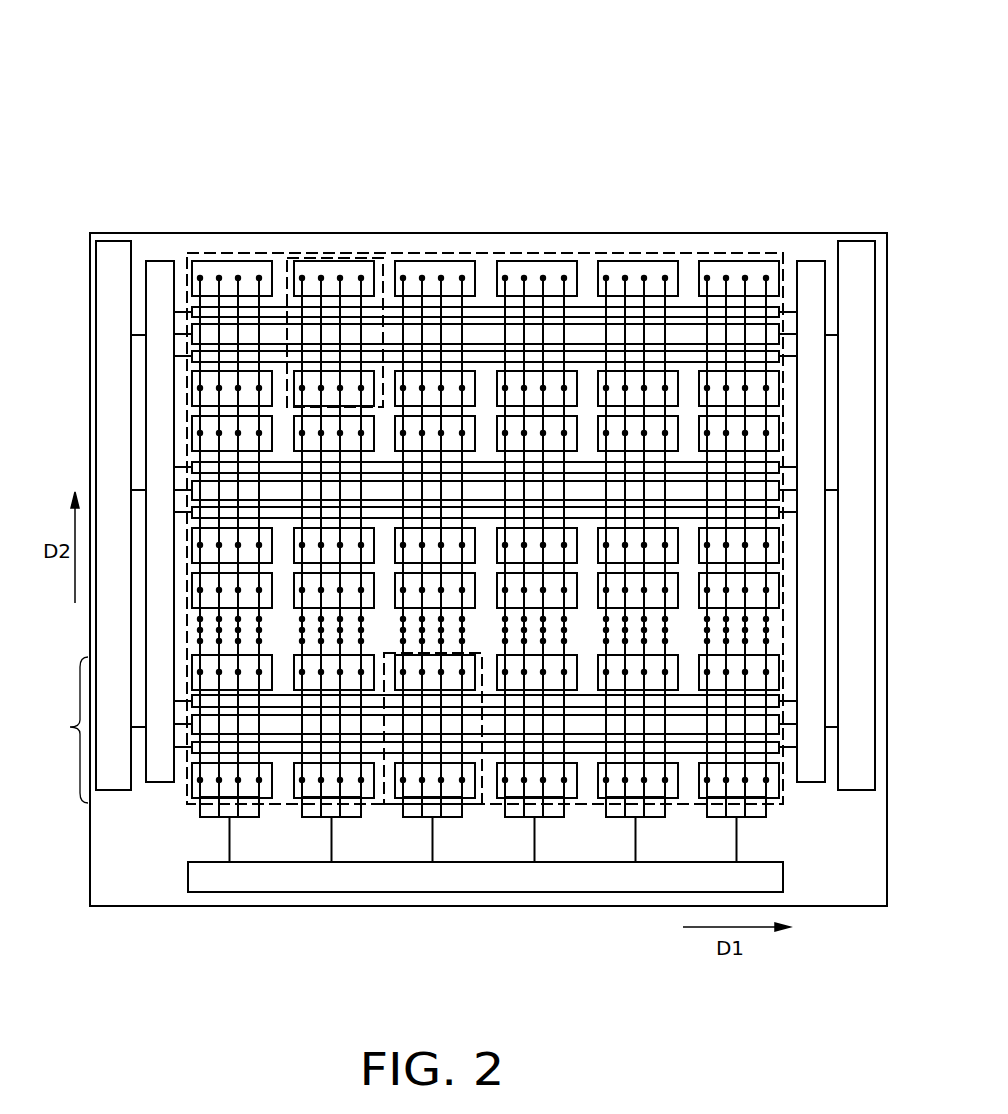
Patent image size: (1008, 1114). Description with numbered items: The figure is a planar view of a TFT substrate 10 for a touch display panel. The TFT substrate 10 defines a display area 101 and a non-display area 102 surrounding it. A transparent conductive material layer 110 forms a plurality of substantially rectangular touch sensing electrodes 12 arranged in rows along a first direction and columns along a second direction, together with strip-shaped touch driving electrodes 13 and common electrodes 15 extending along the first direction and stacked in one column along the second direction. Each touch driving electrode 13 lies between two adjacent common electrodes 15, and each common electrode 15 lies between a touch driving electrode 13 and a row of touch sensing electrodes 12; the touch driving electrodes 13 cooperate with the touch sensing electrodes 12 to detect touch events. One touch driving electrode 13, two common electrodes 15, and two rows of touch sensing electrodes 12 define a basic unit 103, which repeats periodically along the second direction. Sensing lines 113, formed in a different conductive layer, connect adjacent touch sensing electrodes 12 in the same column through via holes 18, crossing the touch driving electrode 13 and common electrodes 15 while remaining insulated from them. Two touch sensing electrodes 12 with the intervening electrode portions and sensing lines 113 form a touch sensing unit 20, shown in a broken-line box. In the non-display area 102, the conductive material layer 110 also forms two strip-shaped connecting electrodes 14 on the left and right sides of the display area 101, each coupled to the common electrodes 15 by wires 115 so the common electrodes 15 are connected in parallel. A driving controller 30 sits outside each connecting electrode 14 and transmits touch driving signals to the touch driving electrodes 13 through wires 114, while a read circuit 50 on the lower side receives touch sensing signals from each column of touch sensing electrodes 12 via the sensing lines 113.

The TFT substrate 10 is at (308, 42).
The touch sensing electrode 12 is at (433, 273).
The touch driving electrode 13 is at (396, 332).
The connecting electrode 14 is at (813, 265).
The common electrode 15 is at (279, 313).
The via hole 18 is at (337, 280).
The touch sensing unit 20 is at (297, 307).
The driving controller 30 is at (866, 253).
The read circuit 50 is at (607, 878).
The display area 101 is at (690, 267).
The non-display area 102 is at (601, 247).
The basic unit 103 is at (56, 730).
The conductive material layer 110 is at (498, 193).
The sensing line 113 is at (237, 288).
The wire 114 is at (140, 333).
The wire 115 is at (182, 312).